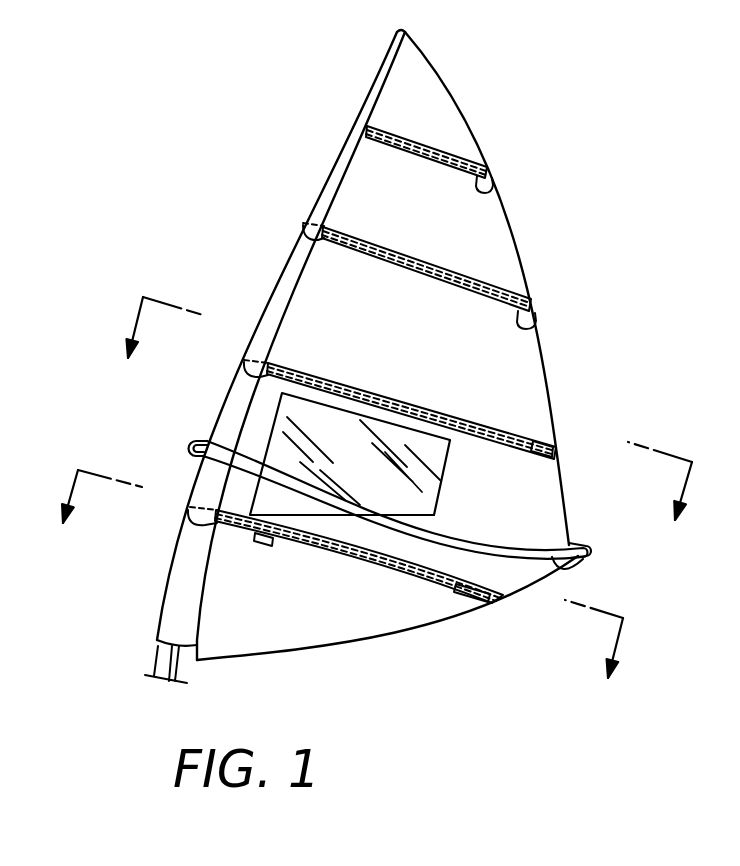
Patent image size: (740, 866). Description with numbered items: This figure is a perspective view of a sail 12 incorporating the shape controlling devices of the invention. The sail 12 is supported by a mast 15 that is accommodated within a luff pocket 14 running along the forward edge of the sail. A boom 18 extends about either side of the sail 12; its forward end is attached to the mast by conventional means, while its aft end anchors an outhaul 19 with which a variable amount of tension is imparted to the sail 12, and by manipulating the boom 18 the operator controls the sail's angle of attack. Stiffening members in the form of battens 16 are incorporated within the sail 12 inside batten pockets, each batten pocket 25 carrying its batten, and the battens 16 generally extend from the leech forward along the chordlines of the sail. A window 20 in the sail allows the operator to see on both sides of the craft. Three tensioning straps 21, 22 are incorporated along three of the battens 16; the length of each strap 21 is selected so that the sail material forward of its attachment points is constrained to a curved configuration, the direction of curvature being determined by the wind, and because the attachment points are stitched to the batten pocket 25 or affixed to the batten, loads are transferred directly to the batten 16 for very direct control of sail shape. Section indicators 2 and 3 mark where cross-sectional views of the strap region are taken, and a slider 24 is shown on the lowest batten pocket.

The sail 12 is at (490, 246).
The luff pocket 14 is at (335, 169).
The mast 15 is at (157, 665).
The battens 16 is at (440, 145).
The boom 18 is at (552, 557).
The outhaul 19 is at (578, 563).
The window 20 is at (287, 420).
The tensioning strap 21 is at (303, 232).
The tensioning strap 22 is at (188, 523).
The batten slider 24 is at (203, 535).
The batten pocket 25 is at (493, 190).
The section line 2- 2 is at (396, 435).
The section line 3- 3 is at (331, 602).